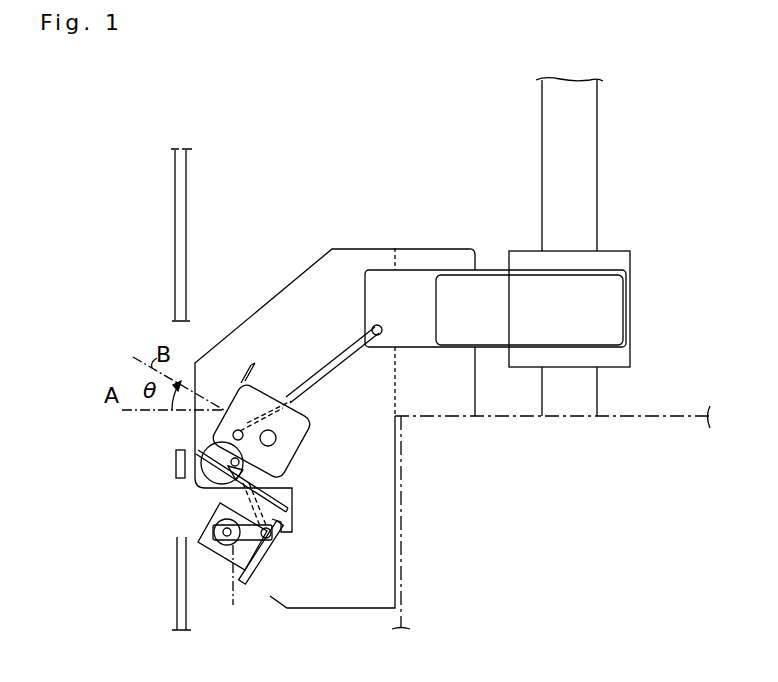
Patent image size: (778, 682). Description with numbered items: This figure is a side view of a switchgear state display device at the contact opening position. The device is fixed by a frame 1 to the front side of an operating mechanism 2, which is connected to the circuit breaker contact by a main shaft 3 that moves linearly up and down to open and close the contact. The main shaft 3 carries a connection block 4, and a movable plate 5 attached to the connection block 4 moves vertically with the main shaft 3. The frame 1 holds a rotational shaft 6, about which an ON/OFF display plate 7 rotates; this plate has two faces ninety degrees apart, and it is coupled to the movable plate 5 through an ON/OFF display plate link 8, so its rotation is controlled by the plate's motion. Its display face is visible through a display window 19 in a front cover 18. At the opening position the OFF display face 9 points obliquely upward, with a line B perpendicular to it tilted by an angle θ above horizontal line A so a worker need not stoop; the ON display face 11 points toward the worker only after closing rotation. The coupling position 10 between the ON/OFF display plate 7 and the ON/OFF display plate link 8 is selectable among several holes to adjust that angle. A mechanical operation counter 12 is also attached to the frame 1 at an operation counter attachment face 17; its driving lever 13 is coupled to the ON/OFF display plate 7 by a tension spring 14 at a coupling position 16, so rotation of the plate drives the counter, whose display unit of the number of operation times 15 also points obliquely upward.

The frame 1 is at (300, 283).
The operating mechanism 2 is at (684, 420).
The main shaft 3 is at (590, 164).
The connection block 4 is at (626, 256).
The movable plate 5 is at (615, 305).
The rotational shaft 6 is at (276, 437).
The ON/OFF display plate 7 is at (300, 473).
The ON/OFF display plate link 8 is at (337, 357).
The OFF display face 9 is at (227, 404).
The coupling position 10 is at (272, 397).
The ON display face 11 is at (197, 483).
The operation counter 12 is at (223, 563).
The driving lever 13 is at (245, 562).
The tension spring 14 is at (273, 512).
The display unit of the number of operation times 15 is at (213, 532).
The coupling position 16 is at (196, 443).
The operation counter attachment face 17 is at (265, 558).
The front cover 18 is at (180, 615).
The display window 19 is at (178, 332).